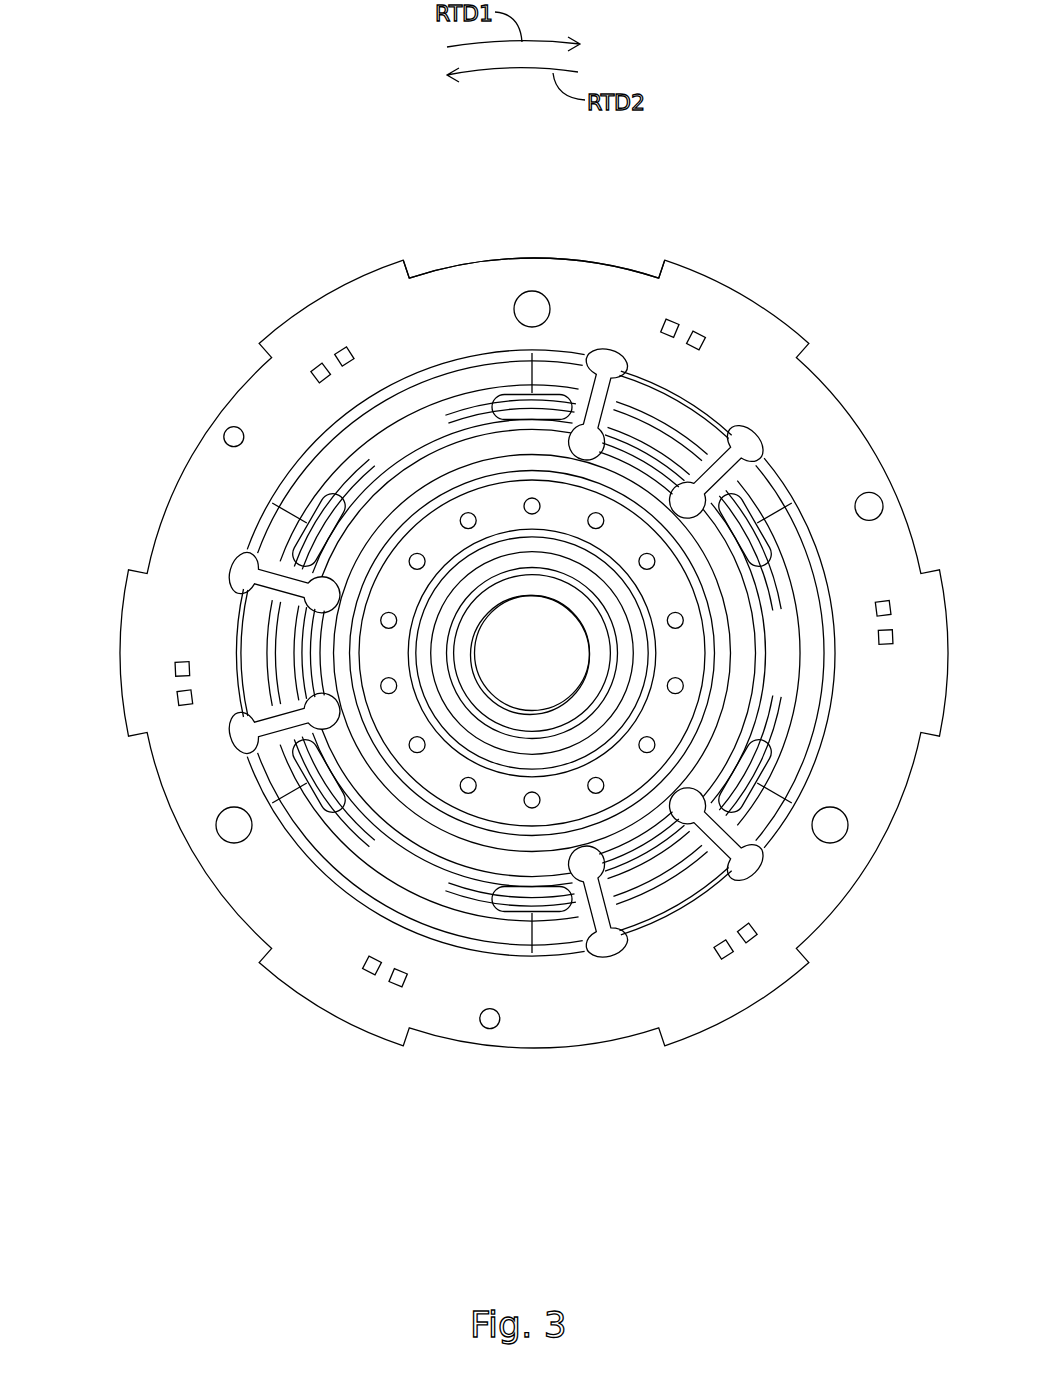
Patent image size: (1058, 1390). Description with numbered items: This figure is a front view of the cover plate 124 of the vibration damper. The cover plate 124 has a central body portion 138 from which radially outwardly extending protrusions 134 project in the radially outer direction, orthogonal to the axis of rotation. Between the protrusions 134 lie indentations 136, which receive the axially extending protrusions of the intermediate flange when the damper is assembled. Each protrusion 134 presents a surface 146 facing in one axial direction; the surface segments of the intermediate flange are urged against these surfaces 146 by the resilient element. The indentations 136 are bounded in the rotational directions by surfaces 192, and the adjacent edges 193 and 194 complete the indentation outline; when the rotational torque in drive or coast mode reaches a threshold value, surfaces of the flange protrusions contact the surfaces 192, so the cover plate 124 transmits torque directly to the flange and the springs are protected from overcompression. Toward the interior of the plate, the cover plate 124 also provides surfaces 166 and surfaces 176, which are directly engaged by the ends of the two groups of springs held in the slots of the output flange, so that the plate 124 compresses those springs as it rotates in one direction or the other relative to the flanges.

The cover plate 124 is at (780, 213).
The radially outwardly extending protrusions 134 is at (335, 285).
The indentations 136 is at (460, 258).
The body portion 138 is at (832, 430).
The surface 146 is at (303, 318).
The surfaces 166 is at (262, 594).
The surfaces 176 is at (630, 418).
The surfaces 192 is at (427, 268).
The notch 193 is at (535, 262).
The notch side wall 194 is at (663, 268).